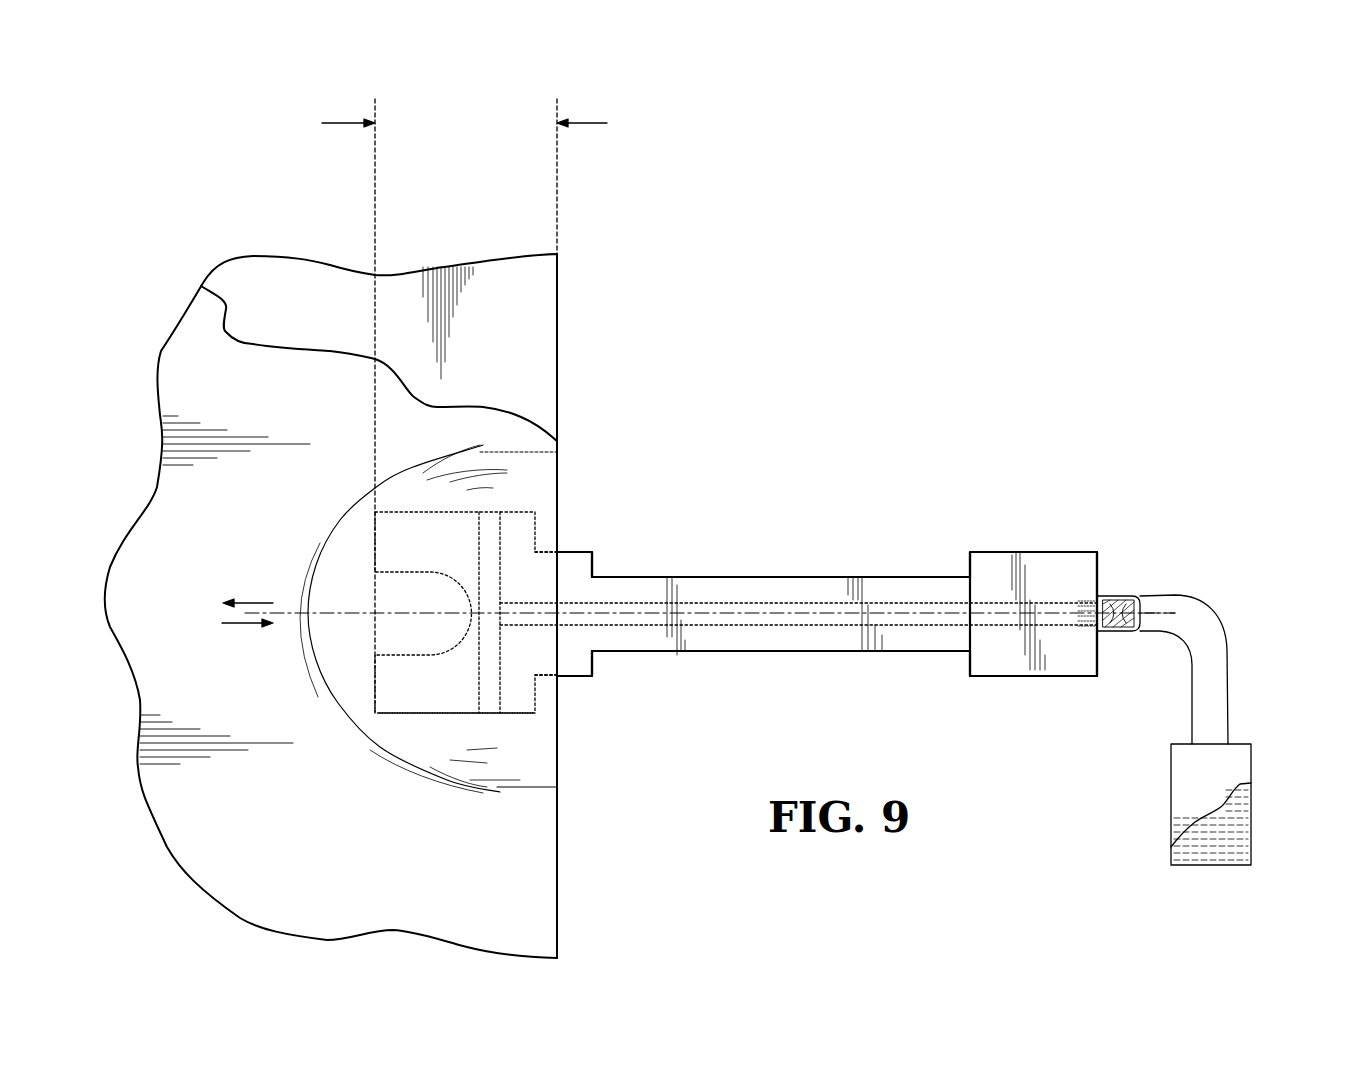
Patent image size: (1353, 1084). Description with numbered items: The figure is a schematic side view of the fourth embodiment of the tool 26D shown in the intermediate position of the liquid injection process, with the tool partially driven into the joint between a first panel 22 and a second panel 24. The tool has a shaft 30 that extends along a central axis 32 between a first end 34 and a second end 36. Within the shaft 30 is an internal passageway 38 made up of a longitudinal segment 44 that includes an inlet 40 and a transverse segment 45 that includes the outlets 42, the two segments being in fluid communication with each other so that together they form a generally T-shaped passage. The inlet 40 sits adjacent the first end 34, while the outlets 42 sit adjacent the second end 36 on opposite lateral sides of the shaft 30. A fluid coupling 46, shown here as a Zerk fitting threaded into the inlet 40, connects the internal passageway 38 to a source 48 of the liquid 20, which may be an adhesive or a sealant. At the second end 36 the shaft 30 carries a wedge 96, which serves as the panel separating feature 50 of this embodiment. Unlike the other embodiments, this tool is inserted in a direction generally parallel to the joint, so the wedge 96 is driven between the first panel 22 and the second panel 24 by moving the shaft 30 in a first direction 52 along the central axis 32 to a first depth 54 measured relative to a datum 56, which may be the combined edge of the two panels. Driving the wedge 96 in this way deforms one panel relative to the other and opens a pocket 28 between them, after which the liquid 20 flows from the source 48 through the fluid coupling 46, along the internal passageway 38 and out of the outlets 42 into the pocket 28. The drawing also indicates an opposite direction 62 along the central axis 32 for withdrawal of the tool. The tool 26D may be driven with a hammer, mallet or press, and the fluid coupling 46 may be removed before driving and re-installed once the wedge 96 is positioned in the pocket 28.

The liquid 20 is at (543, 490).
The first panel 22 is at (198, 380).
The second panel 24 is at (494, 292).
The fourth embodiment of the tool 26D is at (910, 490).
The pocket 28 is at (537, 757).
The shaft 30 is at (900, 582).
The central axis 32 is at (1159, 616).
The first end 34 is at (1101, 649).
The second end 36 is at (593, 565).
The internal passageway 38 is at (897, 618).
The inlet 40 is at (1103, 594).
The outlet 42 is at (480, 520).
The longitudinal segment 44 is at (775, 603).
The transverse segment 45 is at (545, 550).
The fluid coupling 46 is at (1131, 597).
The source of the liquid 48 is at (1215, 867).
The panel separating feature 50 is at (443, 714).
The first direction 52 is at (245, 603).
The first depth 54 is at (603, 124).
The datum 56 is at (557, 107).
The direction arrow 62 is at (228, 628).
The wedge 96 is at (402, 695).